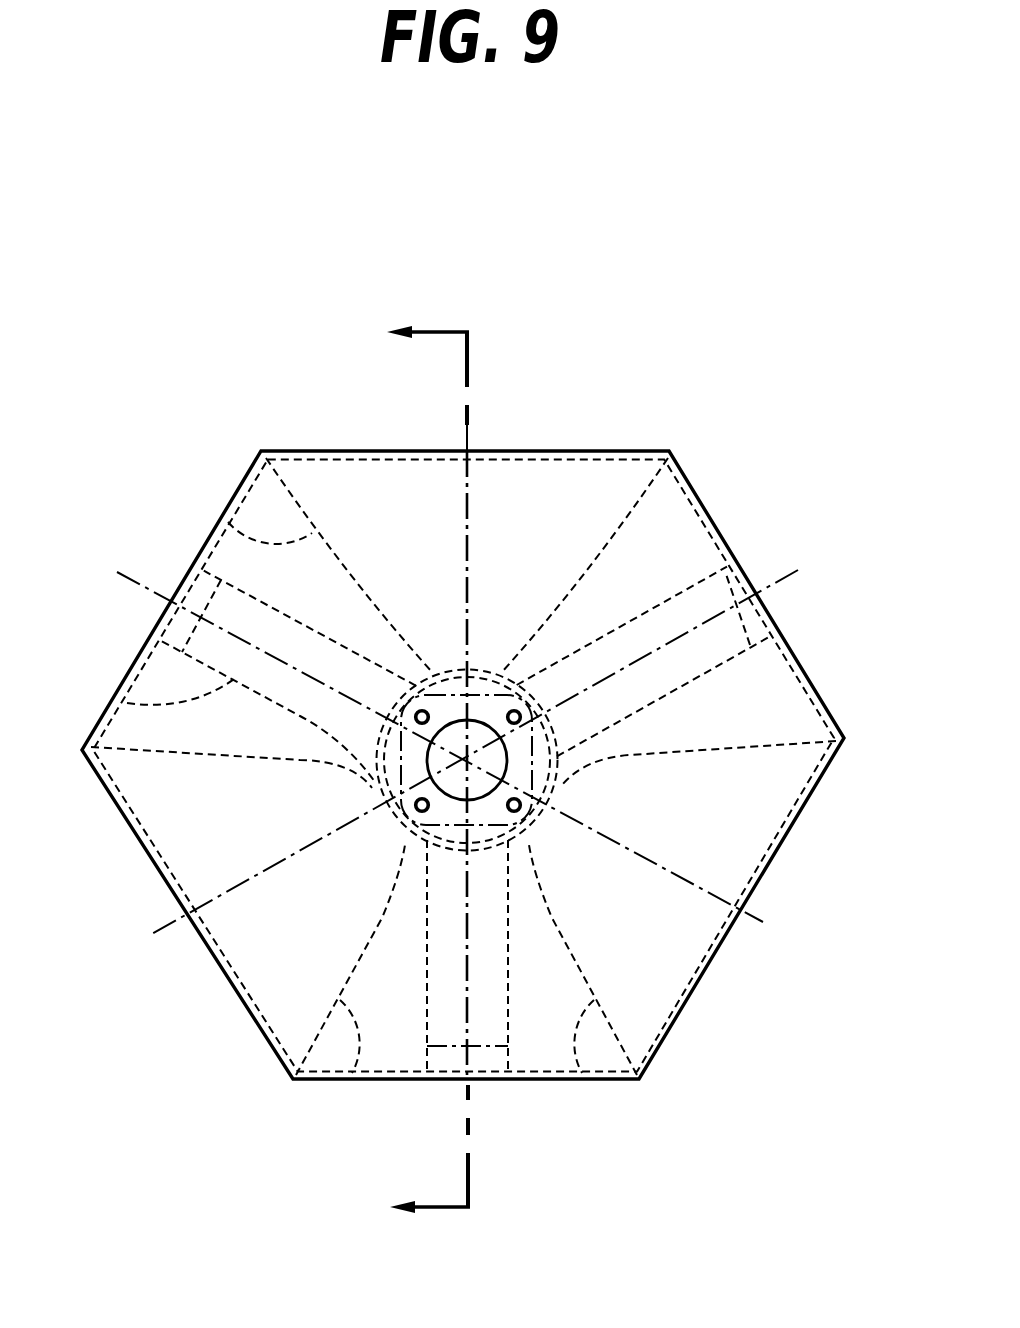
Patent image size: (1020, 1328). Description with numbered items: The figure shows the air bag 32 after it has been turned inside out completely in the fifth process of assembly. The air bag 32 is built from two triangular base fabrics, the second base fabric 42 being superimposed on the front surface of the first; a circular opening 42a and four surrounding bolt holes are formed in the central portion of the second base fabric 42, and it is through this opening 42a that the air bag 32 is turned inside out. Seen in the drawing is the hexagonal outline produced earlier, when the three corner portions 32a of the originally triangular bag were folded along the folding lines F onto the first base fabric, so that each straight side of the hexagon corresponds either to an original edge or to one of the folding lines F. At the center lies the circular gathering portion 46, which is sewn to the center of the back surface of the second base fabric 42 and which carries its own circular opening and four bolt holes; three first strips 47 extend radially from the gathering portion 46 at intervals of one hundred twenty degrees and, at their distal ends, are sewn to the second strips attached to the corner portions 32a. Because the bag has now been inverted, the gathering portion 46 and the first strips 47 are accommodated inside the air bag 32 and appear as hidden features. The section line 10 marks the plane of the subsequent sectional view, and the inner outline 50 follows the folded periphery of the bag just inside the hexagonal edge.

The section line 10- 10 is at (428, 771).
The air bag 32 is at (781, 486).
The corner portions 32a is at (219, 521).
The second base fabric 42 is at (752, 832).
The circular opening 42a is at (438, 752).
The gathering portion 46 is at (550, 733).
The first strips 47 is at (118, 699).
The inner liner 50 is at (805, 672).
The folding lines F is at (523, 450).